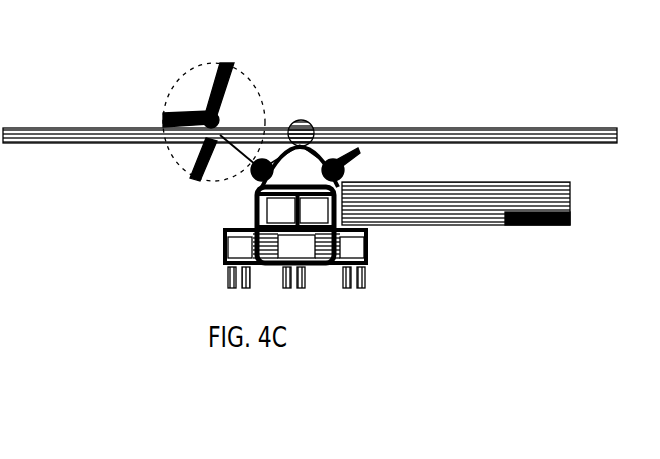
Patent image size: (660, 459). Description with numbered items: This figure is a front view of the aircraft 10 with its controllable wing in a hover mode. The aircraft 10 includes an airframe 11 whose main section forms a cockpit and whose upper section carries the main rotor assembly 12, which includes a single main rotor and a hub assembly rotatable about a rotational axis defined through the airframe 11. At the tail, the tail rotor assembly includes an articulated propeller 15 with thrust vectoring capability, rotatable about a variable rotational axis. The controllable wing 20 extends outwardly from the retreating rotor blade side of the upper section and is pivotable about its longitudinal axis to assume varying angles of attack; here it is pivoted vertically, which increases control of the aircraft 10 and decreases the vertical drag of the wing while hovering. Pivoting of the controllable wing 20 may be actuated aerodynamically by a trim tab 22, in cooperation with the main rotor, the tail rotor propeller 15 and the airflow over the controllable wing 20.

The aircraft 10 is at (222, 245).
The airframe 11 is at (260, 220).
The main rotor assembly 12 is at (307, 133).
The articulated propeller 15 is at (215, 110).
The controllable wing 20 is at (425, 224).
The trim tab 22 is at (545, 221).